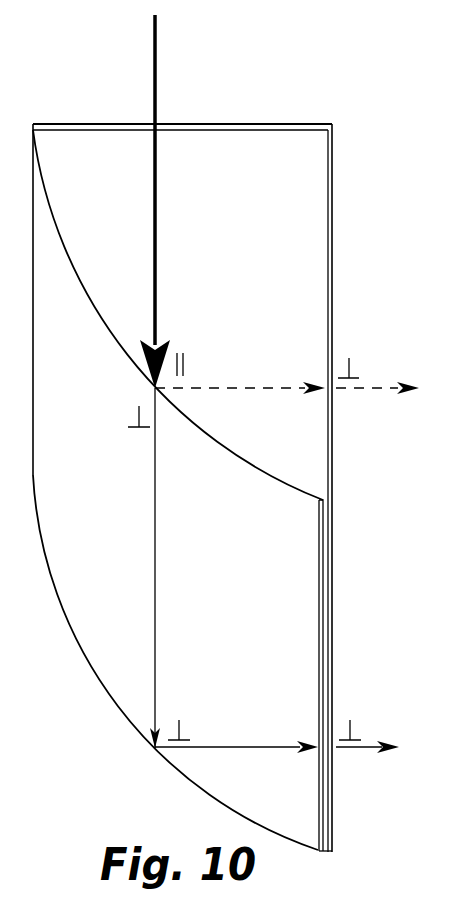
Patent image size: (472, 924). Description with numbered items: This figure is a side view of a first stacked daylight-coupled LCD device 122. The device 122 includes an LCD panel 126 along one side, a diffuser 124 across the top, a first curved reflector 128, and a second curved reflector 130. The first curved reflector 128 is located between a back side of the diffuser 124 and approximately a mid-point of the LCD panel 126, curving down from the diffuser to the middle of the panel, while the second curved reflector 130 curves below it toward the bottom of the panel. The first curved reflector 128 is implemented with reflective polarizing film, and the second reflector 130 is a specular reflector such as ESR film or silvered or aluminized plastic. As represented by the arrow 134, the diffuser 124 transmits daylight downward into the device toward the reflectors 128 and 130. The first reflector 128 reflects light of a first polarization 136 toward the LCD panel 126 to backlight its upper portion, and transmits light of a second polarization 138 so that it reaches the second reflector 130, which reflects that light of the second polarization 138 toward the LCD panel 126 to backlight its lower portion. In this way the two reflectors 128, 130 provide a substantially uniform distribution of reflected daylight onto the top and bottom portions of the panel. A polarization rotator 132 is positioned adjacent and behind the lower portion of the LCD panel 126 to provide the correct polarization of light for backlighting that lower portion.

The first stacked daylight-coupled LCD device 122 is at (250, 433).
The diffuser 124 is at (88, 123).
The LCD panel 126 is at (331, 268).
The first curved reflector 128 is at (262, 473).
The second curved reflector 130 is at (116, 704).
The polarization rotator 132 is at (318, 628).
The arrow 134 is at (153, 35).
The light of a first polarization 136 is at (263, 386).
The light of a second polarization 138 is at (262, 746).